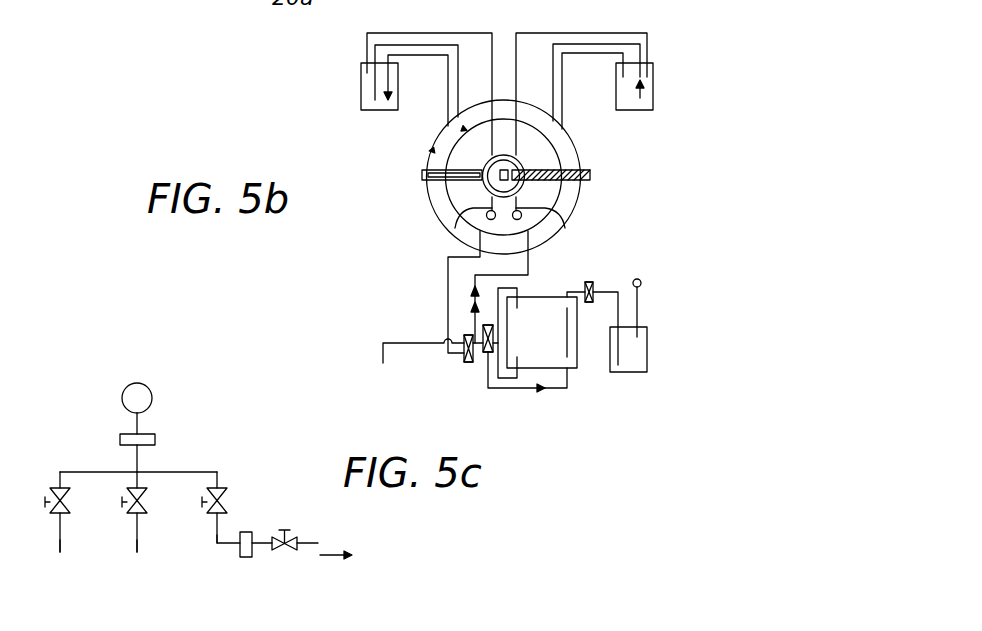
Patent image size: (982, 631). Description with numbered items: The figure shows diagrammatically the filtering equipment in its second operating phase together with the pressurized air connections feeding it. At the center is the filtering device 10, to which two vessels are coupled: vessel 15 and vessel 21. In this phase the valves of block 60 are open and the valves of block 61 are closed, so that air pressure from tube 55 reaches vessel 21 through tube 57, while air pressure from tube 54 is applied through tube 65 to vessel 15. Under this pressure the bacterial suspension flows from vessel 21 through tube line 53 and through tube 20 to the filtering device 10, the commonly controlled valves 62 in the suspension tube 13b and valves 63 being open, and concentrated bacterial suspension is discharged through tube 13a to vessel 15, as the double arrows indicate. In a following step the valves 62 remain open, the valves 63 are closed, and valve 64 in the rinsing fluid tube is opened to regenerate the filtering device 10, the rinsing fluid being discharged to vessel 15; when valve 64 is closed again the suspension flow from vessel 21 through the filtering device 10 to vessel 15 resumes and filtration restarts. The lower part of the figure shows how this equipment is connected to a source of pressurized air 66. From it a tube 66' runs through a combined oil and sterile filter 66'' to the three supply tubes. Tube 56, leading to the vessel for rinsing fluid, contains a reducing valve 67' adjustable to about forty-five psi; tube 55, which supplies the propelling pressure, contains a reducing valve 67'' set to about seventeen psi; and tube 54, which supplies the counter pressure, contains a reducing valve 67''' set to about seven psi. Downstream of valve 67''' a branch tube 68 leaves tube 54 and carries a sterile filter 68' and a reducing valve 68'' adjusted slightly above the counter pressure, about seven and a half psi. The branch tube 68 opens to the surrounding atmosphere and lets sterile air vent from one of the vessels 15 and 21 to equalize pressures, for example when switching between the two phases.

In FIG. 5b, the tube 13a is at (415, 54).
In FIG. 5b, the tube 65 is at (493, 50).
In FIG. 5b, the tube 57 is at (516, 50).
In FIG. 5b, the vessel 15 is at (360, 90).
In FIG. 5b, the vessel 21 is at (653, 90).
In FIG. 5b, the valve block 60 is at (422, 175).
In FIG. 5b, the tube line 53 is at (445, 188).
In FIG. 5b, the valve block 61 is at (590, 177).
In FIG. 5b, the tube 54 is at (473, 208).
In FIG. 5c, the tube 54 is at (217, 558).
In FIG. 5b, the tube 55 is at (552, 205).
In FIG. 5c, the tube 55 is at (140, 537).
In FIG. 5b, the suspension tube 13b is at (527, 262).
In FIG. 5b, the filtering device 10 is at (556, 285).
In FIG. 5b, the valve 64 is at (594, 285).
In FIG. 5b, the tube 20 is at (448, 302).
In FIG. 5b, the valves 63 is at (467, 362).
In FIG. 5b, the valves 62 is at (487, 352).
In FIG. 5c, the source of pressurized air 66 is at (154, 386).
In FIG. 5c, the tube 66' is at (166, 415).
In FIG. 5c, the combined oil and sterile filter 66'' is at (138, 448).
In FIG. 5c, the reducing valve 67' is at (75, 512).
In FIG. 5c, the reducing valve 67'' is at (154, 512).
In FIG. 5c, the reducing valve 67''' is at (238, 507).
In FIG. 5c, the tube 56 is at (63, 537).
In FIG. 5c, the sterile filter 68' is at (240, 566).
In FIG. 5c, the branch tube 68 is at (278, 560).
In FIG. 5c, the reducing valve 68'' is at (322, 567).